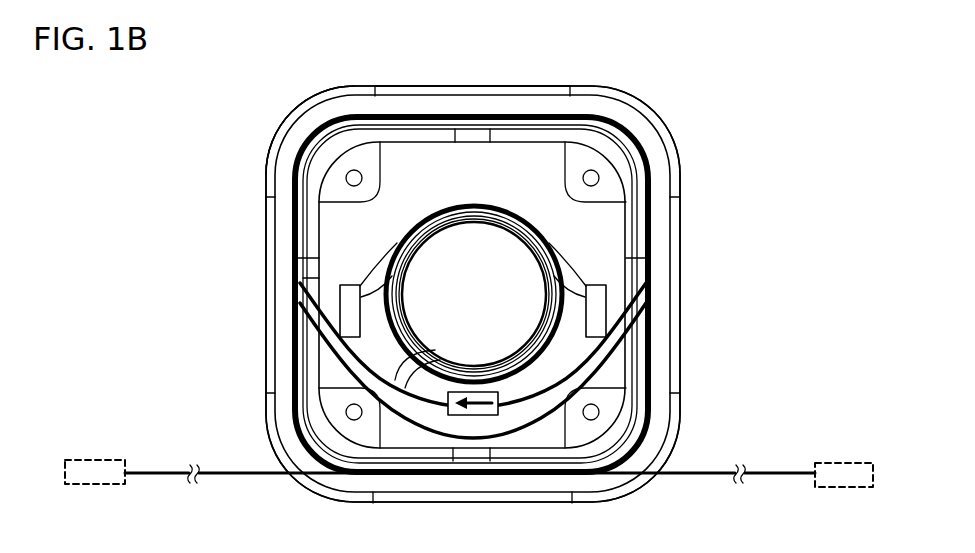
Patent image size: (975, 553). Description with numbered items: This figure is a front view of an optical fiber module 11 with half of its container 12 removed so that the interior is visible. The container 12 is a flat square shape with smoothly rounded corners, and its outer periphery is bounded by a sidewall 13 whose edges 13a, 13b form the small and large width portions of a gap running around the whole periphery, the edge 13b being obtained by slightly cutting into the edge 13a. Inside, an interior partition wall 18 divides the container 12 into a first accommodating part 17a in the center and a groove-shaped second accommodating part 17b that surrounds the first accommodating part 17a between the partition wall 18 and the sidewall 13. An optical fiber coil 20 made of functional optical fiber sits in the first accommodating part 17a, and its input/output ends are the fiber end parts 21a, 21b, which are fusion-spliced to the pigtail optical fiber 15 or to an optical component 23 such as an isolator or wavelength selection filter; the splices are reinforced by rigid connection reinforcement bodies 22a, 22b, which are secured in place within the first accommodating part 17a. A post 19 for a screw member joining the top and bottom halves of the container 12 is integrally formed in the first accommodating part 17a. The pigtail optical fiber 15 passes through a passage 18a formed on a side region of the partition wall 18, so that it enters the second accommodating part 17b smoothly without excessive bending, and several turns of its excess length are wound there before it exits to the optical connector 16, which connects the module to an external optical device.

The optical fiber module 11 is at (650, 62).
The container 12 is at (672, 137).
The sidewall 13 is at (348, 87).
The edge 13a is at (493, 93).
The edge 13b is at (292, 118).
The pigtail optical fiber 15 is at (428, 348).
The optical connector 16 is at (100, 460).
The first accommodating part 17a is at (290, 257).
The second accommodating part 17b is at (282, 182).
The partition wall 18 is at (652, 245).
The passage 18a is at (645, 305).
The post 19 is at (380, 167).
The optical fiber coil 20 is at (498, 207).
The fiber end part 21a is at (592, 284).
The fiber end part 21b is at (353, 284).
The connection reinforcement body 22a is at (547, 294).
The connection reinforcement body 22b is at (407, 278).
The optical component 23 is at (478, 391).